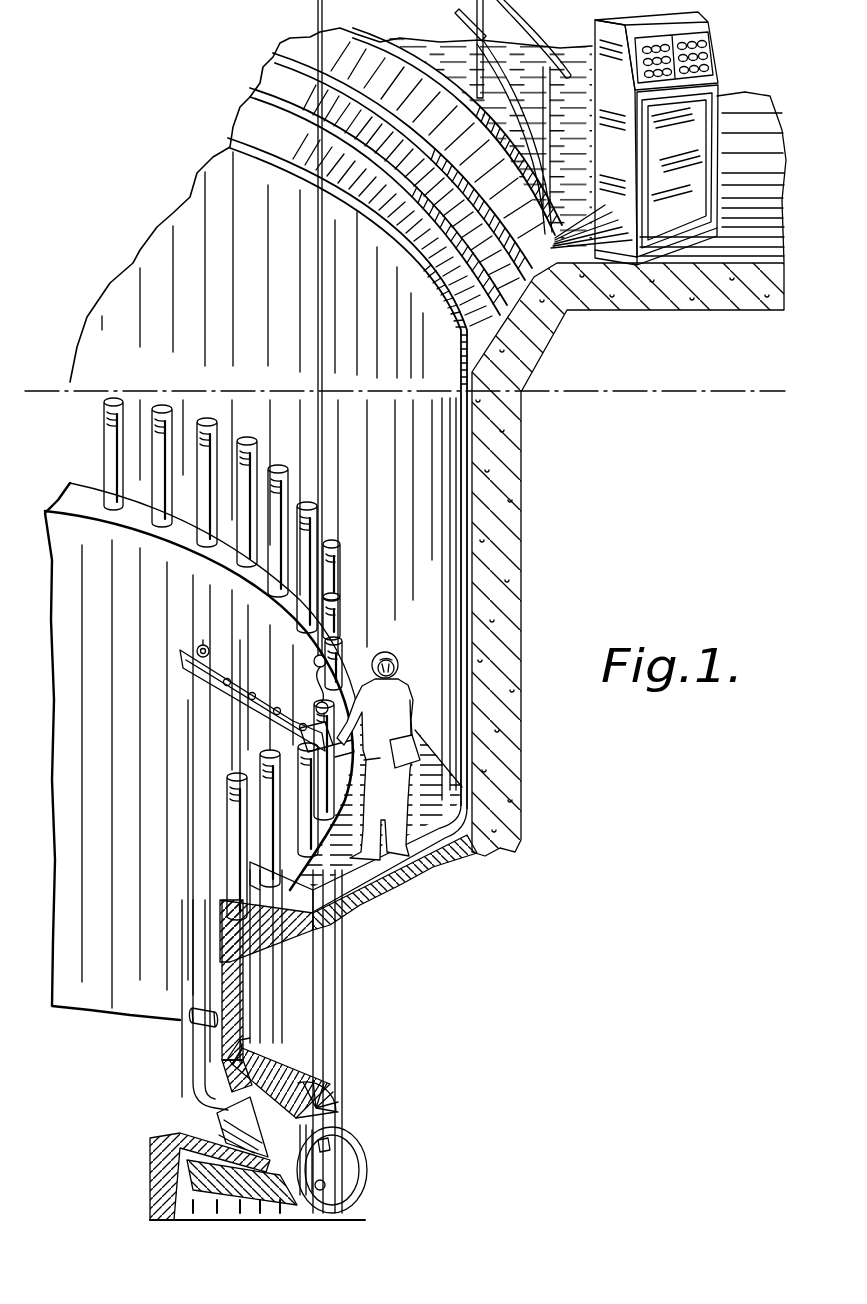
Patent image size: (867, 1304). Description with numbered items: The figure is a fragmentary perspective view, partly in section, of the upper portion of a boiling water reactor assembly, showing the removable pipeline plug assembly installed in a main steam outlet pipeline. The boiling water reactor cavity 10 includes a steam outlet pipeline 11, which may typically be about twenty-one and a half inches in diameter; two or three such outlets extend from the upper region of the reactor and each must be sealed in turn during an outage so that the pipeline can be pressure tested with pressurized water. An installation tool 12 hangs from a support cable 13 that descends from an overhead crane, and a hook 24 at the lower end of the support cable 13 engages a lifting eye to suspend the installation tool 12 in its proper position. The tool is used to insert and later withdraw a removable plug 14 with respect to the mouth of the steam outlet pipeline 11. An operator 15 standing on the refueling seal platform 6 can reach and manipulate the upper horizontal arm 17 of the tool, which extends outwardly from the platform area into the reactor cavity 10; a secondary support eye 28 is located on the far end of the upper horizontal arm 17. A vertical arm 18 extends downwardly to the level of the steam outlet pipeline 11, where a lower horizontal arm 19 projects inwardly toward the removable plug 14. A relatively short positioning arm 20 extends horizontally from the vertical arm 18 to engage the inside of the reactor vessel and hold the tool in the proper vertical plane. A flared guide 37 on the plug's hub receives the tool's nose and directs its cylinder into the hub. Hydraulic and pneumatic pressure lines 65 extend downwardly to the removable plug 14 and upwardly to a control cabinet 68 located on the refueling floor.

The platform floor 6 is at (440, 800).
The boiling water reactor cavity 10 is at (70, 780).
The steam outlet pipeline 11 is at (320, 1112).
The installation tool 12 is at (168, 826).
The support cable 13 is at (318, 281).
The removable plug 14 is at (350, 1158).
The operator 15 is at (412, 708).
The upper horizontal arm 17 is at (209, 652).
The vertical arm 18 is at (188, 733).
The lower horizontal arm 19 is at (205, 1100).
The positioning arm 20 is at (195, 1012).
The hook 24 is at (340, 688).
The secondary support eye 28 is at (128, 647).
The flared guide 37 is at (218, 1120).
The hydraulic and pneumatic pressure lines 65 is at (490, 470).
The control cabinet 68 is at (700, 120).